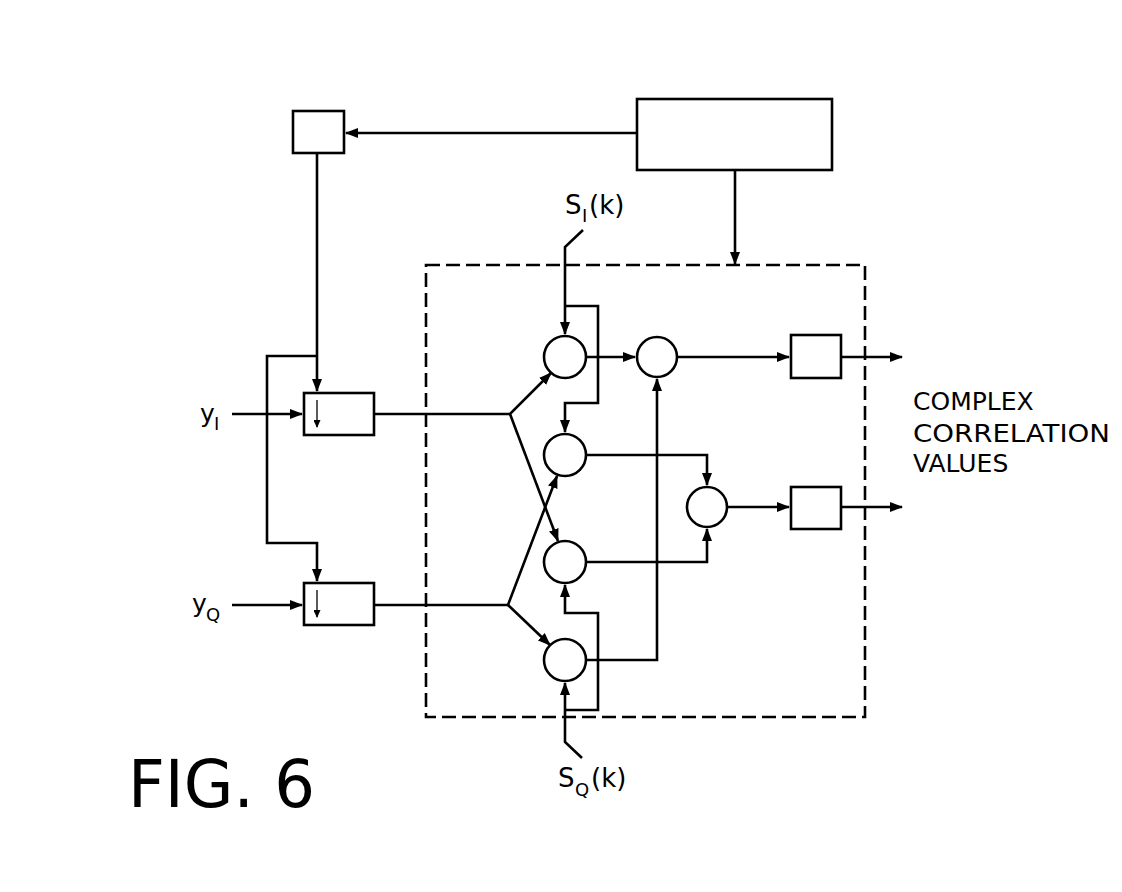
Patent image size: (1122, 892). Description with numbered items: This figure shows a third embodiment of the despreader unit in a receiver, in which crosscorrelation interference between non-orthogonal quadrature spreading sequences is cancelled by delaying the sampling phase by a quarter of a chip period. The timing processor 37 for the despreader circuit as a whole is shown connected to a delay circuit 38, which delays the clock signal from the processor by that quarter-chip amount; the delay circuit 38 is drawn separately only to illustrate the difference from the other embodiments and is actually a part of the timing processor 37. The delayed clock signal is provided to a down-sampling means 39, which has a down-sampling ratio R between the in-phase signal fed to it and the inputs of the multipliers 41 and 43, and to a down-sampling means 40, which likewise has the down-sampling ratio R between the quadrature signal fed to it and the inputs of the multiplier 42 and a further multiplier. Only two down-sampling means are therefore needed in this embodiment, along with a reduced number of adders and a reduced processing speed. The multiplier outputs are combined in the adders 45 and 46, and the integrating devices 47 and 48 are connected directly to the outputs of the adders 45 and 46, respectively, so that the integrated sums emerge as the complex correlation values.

The timing processor 37 is at (740, 99).
The delay circuit 38 is at (316, 110).
The down-sampling means 39 is at (357, 392).
The down-sampling means 40 is at (357, 582).
The multiplier 41 is at (544, 362).
The multiplier 42 is at (544, 460).
The multiplier 43 is at (544, 567).
The adder 45 is at (657, 337).
The adder 46 is at (687, 510).
The integrating device 47 is at (804, 335).
The integrating device 48 is at (544, 665).